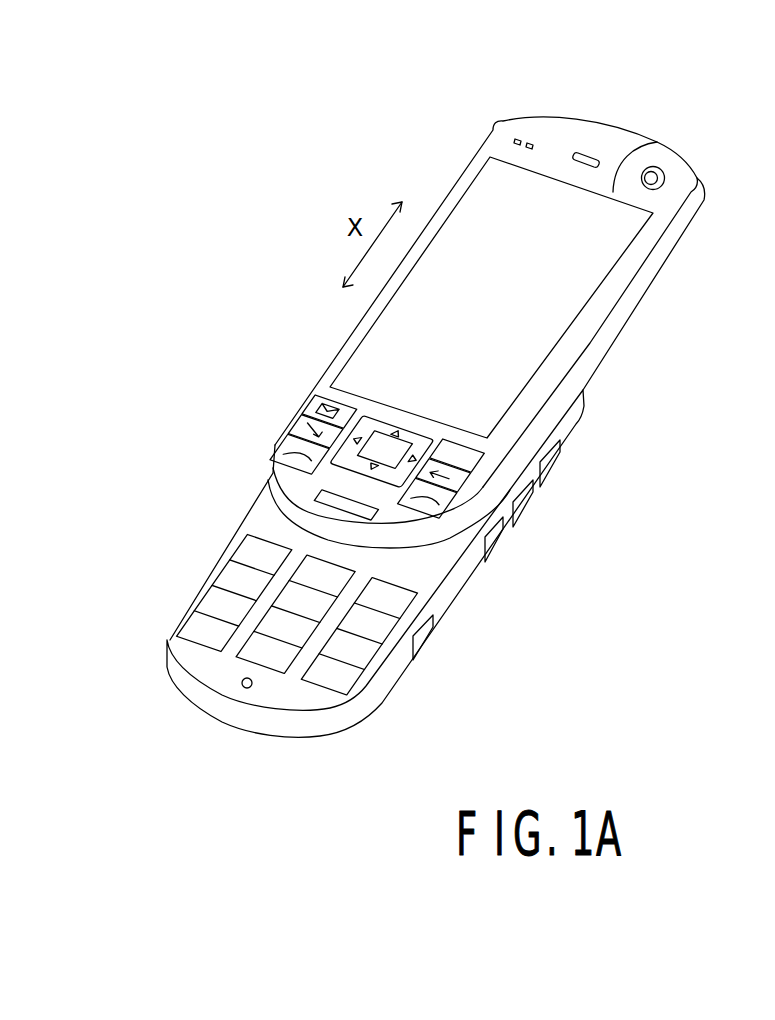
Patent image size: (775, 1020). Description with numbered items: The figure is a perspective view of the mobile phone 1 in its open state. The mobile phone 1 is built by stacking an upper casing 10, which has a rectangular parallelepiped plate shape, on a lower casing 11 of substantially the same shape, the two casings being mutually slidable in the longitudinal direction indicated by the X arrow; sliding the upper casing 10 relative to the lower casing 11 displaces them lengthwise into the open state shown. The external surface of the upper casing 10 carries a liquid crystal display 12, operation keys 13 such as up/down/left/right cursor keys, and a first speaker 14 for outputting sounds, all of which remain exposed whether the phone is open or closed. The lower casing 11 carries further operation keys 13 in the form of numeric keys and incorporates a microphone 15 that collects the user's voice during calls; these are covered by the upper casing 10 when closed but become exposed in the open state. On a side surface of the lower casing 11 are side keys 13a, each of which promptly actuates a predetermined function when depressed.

The mobile phone 1 is at (431, 126).
The upper casing 10 is at (682, 173).
The lower casing 11 is at (584, 396).
The liquid crystal display 12 is at (657, 142).
The operation keys 13 is at (292, 455).
The side keys 13a is at (557, 460).
The first speaker 14 is at (588, 150).
The microphone 15 is at (242, 685).